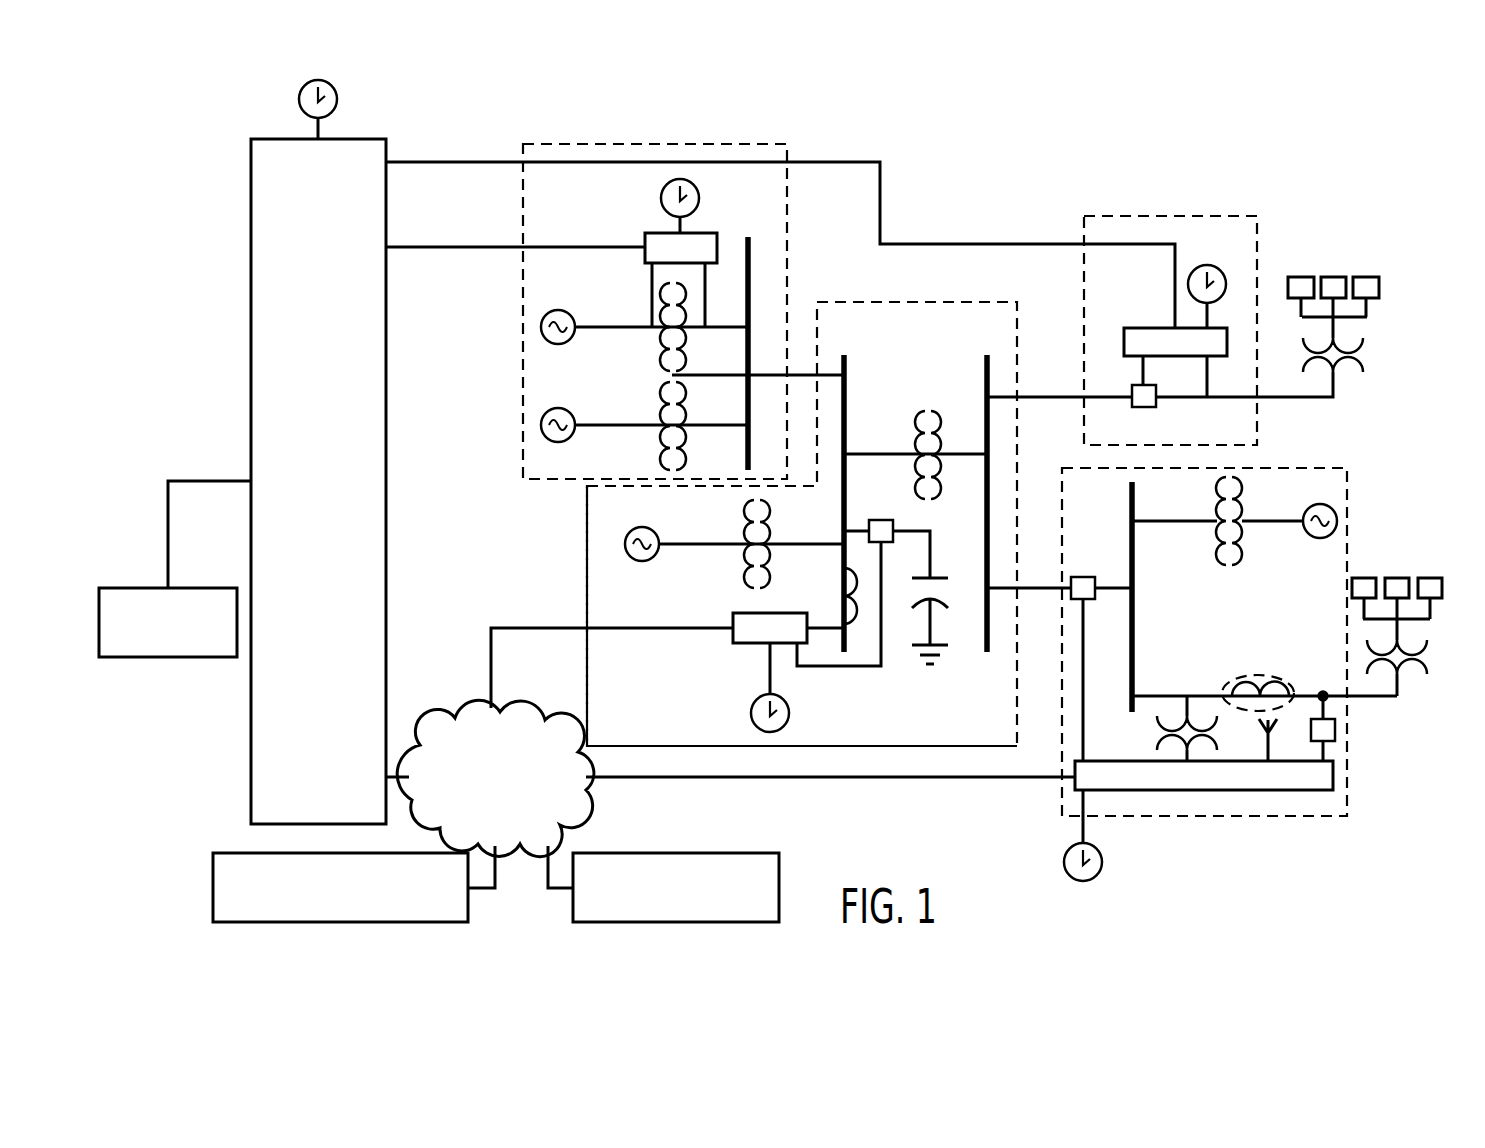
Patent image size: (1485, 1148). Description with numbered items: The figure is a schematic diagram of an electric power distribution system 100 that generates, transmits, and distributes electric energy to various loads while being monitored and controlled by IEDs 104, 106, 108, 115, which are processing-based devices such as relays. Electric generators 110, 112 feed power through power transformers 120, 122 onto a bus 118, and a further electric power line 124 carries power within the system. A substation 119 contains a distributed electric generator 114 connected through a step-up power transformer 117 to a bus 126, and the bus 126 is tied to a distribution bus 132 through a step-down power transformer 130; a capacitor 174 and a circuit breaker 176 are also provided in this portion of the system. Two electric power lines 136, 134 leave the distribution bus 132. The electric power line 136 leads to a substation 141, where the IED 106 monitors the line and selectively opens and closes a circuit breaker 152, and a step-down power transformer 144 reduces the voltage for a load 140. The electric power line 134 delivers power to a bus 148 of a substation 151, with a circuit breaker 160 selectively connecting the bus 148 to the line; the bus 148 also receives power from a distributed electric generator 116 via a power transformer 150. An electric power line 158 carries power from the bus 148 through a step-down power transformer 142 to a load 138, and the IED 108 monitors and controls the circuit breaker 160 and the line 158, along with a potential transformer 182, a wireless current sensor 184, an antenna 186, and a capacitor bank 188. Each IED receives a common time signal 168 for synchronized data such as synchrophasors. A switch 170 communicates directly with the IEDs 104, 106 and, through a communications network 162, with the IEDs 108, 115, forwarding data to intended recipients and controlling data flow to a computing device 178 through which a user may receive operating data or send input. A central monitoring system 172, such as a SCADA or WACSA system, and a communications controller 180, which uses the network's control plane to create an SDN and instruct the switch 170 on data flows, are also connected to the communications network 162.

The electric power distribution system 100 is at (1337, 132).
The IED 104 is at (663, 233).
The IED 106 is at (1138, 328).
The IED 108 is at (1260, 792).
The electric generator 110 is at (560, 311).
The electric generator 112 is at (560, 410).
The electric generator 114 is at (645, 527).
The IED 115 is at (773, 613).
The electric generator 116 is at (1306, 538).
The power transformer 117 is at (746, 577).
The bus 118 is at (750, 240).
The substation 119 is at (585, 578).
The power transformer 120 is at (662, 358).
The power transformer 122 is at (662, 455).
The electric power line 124 is at (800, 373).
The bus 126 is at (846, 385).
The power transformer 130 is at (922, 414).
The distribution bus 132 is at (985, 635).
The electric power line 134 is at (1030, 592).
The electric power line 136 is at (1110, 402).
The load 138 is at (1397, 578).
The load 140 is at (1365, 275).
The substation 141 is at (1108, 215).
The power transformer 142 is at (1418, 658).
The power transformer 144 is at (1358, 355).
The bus 148 is at (1130, 486).
The power transformer 150 is at (1232, 477).
The substation 151 is at (1323, 818).
The circuit breaker 152 is at (1140, 408).
The electric power line 158 is at (1372, 700).
The circuit breaker 160 is at (1095, 578).
The communications network 162 is at (442, 720).
The common time signal 168 is at (338, 100).
The switch 170 is at (388, 478).
The central monitoring system 172 is at (213, 883).
The capacitor 174 is at (943, 578).
The circuit breaker 176 is at (880, 519).
The computing device 178 is at (167, 658).
The communications controller 180 is at (658, 853).
The potential transformer 182 is at (1160, 733).
The wireless current sensor 184 is at (1258, 677).
The antenna 186 is at (1282, 725).
The capacitor bank 188 is at (1336, 728).